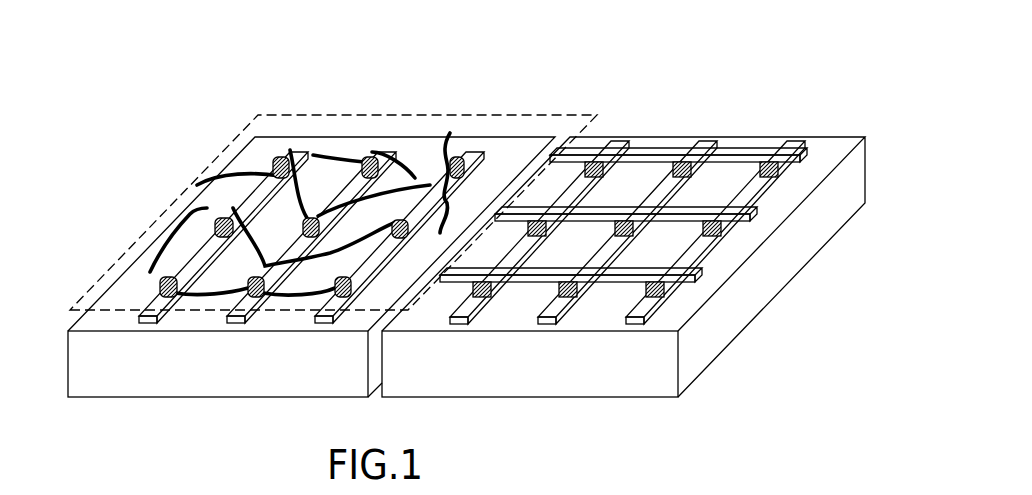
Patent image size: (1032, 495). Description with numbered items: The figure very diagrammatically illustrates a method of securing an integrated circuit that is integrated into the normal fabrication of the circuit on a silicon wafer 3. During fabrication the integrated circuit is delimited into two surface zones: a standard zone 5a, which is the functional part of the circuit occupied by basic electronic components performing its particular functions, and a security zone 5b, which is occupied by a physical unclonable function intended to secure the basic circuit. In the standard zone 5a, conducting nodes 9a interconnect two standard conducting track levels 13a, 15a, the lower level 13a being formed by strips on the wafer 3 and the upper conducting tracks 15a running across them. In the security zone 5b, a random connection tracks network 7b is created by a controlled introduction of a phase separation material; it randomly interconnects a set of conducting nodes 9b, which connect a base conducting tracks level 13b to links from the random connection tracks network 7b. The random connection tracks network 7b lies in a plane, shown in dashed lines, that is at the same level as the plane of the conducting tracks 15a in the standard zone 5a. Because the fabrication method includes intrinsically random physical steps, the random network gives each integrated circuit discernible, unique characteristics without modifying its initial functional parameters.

The silicon wafer 3 is at (216, 386).
The standard zone 5a is at (736, 96).
The security zone 5b is at (414, 99).
The random connection tracks network 7b is at (153, 271).
The conducting nodes 9a is at (790, 165).
The conducting nodes 9b is at (275, 170).
The standard conducting track level 13a is at (660, 315).
The base conducting tracks level 13b is at (134, 308).
The conducting tracks 15a is at (758, 215).